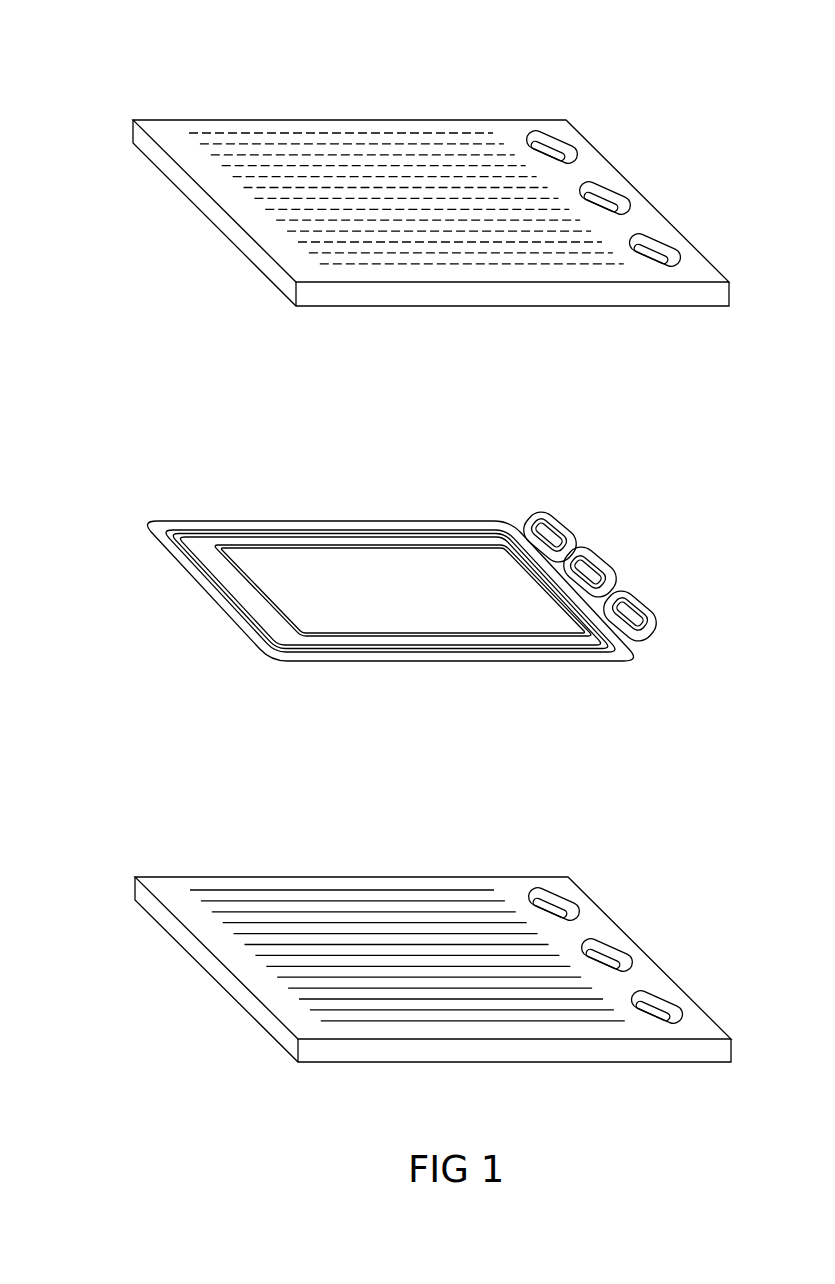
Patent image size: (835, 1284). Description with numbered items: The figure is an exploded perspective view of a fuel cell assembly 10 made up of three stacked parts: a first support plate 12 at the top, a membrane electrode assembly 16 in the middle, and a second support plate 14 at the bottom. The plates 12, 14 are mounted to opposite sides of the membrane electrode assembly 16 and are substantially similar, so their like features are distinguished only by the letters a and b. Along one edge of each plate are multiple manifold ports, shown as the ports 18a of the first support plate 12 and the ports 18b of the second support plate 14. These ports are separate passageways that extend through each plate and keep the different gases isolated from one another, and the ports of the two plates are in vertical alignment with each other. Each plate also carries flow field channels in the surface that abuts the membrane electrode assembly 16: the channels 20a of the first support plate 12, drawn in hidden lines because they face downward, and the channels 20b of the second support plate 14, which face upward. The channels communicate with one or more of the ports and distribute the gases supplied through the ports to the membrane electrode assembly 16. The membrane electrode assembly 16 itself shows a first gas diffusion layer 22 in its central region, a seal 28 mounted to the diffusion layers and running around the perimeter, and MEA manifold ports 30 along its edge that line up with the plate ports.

The fuel cell assembly 10 is at (126, 60).
The first support plate 12 is at (419, 175).
The second support plate 14 is at (410, 932).
The membrane electrode assembly 16 is at (369, 555).
The manifold ports of the first support plate 18a is at (558, 146).
The manifold ports of the second support plate 18b is at (560, 903).
The flow field channels of the first support plate 20a is at (287, 145).
The flow field channels of the second support plate 20b is at (335, 909).
The first gas diffusion layer 22 is at (357, 563).
The seal 28 is at (196, 524).
The MEA manifold ports 30 is at (572, 537).